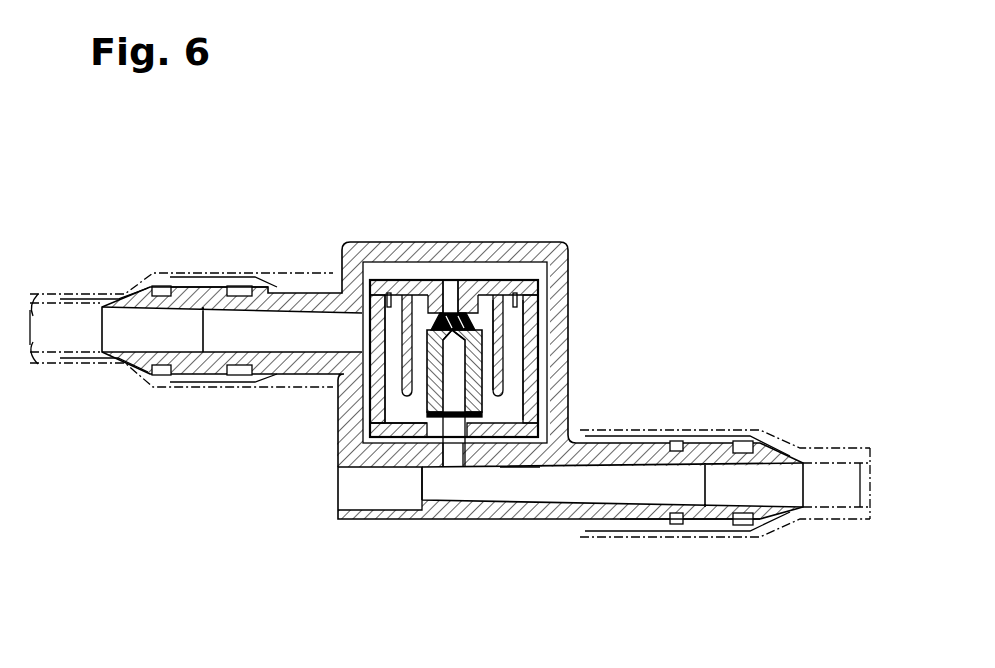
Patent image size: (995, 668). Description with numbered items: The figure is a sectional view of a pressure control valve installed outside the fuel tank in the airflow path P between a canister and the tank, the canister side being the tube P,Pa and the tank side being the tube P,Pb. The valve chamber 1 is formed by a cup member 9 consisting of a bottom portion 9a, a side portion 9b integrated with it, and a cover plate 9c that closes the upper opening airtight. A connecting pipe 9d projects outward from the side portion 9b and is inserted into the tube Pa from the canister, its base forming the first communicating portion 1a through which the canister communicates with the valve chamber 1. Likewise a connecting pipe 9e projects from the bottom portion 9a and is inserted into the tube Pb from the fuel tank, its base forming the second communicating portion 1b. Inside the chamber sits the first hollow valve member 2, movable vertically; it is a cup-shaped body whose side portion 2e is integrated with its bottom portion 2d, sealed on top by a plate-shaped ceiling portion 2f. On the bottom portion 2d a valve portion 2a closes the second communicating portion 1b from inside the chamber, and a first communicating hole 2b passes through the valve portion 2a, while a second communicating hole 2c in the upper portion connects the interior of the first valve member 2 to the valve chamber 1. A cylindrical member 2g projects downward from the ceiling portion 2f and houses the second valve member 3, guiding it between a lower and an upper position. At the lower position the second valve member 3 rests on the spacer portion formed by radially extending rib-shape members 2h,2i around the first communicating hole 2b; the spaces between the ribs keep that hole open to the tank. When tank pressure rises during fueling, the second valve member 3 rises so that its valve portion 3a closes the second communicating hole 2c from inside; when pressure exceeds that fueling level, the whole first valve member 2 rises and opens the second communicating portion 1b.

The valve chamber 1 is at (509, 252).
The first communicating portion 1a is at (330, 293).
The second communicating portion 1b is at (457, 477).
The first hollow valve member 2 is at (545, 296).
The valve portion 2a is at (480, 468).
The first communicating hole 2b is at (447, 478).
The second communicating hole 2c is at (452, 311).
The bottom portion 2d is at (397, 437).
The side portion 2e is at (370, 405).
The ceiling portion 2f is at (393, 282).
The cylindrical member 2g is at (503, 330).
The spacer portion and rib-shape members 2h,2i is at (480, 417).
The second valve member 3 is at (482, 352).
The valve portion 3a is at (462, 328).
The cup member 9 is at (565, 266).
The bottom portion 9a is at (518, 460).
The side portion 9b is at (548, 366).
The cover plate 9c is at (436, 280).
The connecting pipe 9d is at (222, 288).
The connecting pipe 9e is at (688, 527).
The airflow path and tube P,Pa is at (63, 292).
The airflow path and tube P,Pb is at (832, 490).